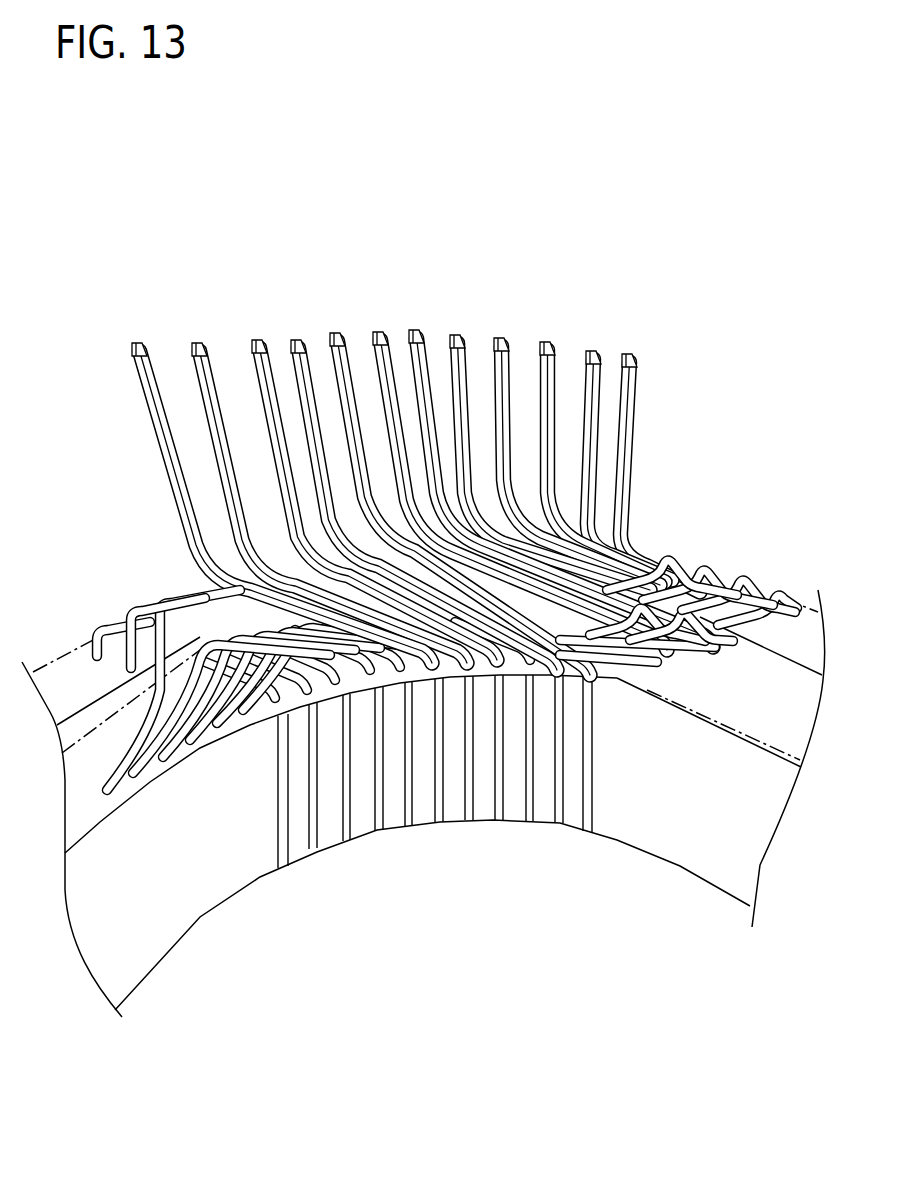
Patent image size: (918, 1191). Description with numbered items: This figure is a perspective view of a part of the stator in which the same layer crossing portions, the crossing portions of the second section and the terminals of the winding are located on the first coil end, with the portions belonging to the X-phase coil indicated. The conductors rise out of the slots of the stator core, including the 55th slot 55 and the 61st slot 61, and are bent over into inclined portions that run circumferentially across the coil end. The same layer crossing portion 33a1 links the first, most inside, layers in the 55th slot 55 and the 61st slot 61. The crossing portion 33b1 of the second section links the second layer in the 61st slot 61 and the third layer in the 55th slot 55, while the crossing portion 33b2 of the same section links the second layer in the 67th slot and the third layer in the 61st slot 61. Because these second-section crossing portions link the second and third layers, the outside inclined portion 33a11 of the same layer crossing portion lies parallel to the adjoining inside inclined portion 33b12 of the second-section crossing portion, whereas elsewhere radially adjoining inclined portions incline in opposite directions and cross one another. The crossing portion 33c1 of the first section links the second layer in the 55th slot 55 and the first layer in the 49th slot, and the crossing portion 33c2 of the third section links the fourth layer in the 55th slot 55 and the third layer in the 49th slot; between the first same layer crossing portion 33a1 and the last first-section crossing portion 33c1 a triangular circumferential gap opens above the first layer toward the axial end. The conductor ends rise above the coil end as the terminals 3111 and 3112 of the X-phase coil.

The terminal 3111 is at (387, 373).
The terminal 3112 is at (637, 387).
The same layer crossing portion 33a1 is at (383, 623).
The outside inclined portion 33a11 is at (460, 620).
The crossing portion 33b1 is at (390, 557).
The oblique portion of turn portion 33b12 is at (440, 570).
The crossing portion 33b2 is at (637, 540).
The crossing portion 33c1 is at (197, 615).
The crossing portion 33c2 is at (167, 600).
The 55th slot 55 is at (315, 855).
The 61st slot 61 is at (497, 822).